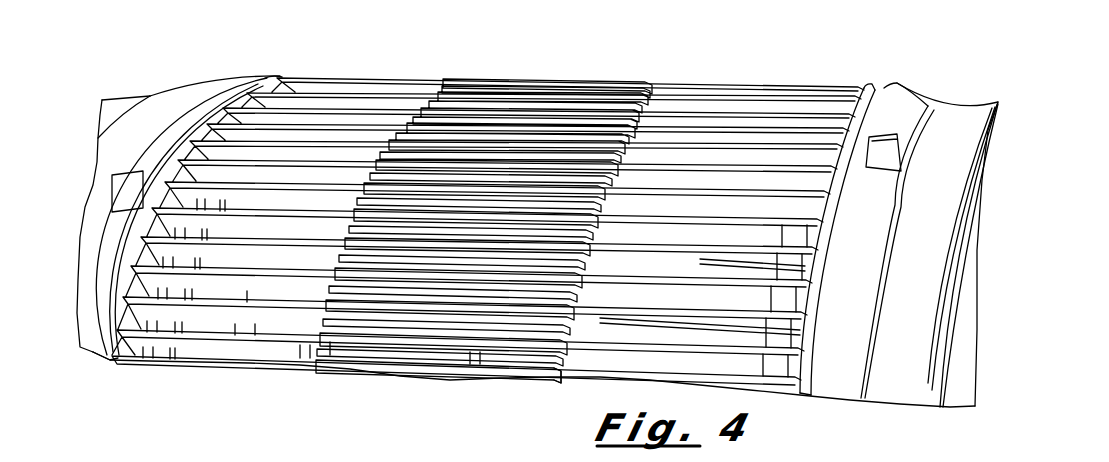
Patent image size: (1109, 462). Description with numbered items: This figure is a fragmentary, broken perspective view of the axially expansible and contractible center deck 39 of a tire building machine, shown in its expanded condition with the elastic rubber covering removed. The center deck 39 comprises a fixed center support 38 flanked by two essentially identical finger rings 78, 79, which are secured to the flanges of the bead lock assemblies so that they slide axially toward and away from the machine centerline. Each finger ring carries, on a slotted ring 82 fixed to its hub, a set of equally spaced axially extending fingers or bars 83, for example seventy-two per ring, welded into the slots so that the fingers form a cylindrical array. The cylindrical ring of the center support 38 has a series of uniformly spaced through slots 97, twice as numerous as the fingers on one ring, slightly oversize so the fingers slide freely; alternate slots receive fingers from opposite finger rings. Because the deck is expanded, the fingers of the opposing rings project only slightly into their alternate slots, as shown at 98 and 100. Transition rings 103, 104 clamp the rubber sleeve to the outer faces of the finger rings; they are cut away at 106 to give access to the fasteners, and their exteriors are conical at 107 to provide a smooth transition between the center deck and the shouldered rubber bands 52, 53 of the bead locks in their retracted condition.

The center support 38 is at (520, 87).
The center deck 39 is at (570, 85).
The shouldered rubber band or ring 52 is at (968, 106).
The shouldered rubber band or ring 53 is at (207, 88).
The finger ring 78 is at (858, 102).
The finger ring 79 is at (234, 90).
The ring 82 is at (217, 118).
The fingers or bars 83 is at (340, 108).
The through slots 97 is at (472, 357).
The fingers projecting into alternate slots 98 is at (340, 352).
The fingers projecting into alternate slots 100 is at (538, 352).
The transition ring 103 is at (93, 353).
The transition ring 104 is at (847, 383).
The cut away 106 is at (880, 166).
The conical exterior 107 is at (905, 86).